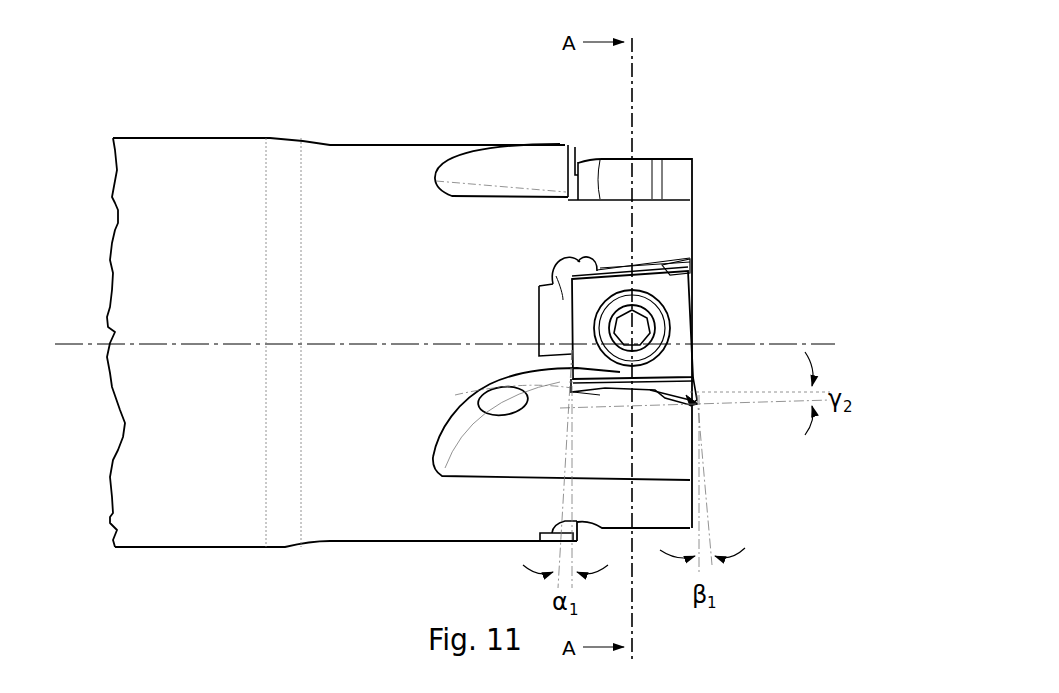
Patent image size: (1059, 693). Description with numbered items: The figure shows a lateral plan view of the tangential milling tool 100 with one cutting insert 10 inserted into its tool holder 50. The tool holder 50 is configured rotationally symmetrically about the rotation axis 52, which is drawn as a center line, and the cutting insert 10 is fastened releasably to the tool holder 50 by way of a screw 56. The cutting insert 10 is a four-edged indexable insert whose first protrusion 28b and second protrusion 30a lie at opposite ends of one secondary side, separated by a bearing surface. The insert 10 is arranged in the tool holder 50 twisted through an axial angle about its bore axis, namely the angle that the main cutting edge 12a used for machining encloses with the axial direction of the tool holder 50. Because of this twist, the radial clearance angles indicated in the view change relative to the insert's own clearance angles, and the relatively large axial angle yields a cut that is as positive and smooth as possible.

The tangential milling tool 100 is at (421, 132).
The tool holder 50 is at (372, 508).
The rotation axis 52 is at (68, 344).
The cutting insert 10 is at (684, 318).
The screw 56 is at (632, 328).
The first protrusion 28b is at (692, 280).
The second protrusion 30a is at (696, 386).
The main cutting edge 12a is at (700, 402).